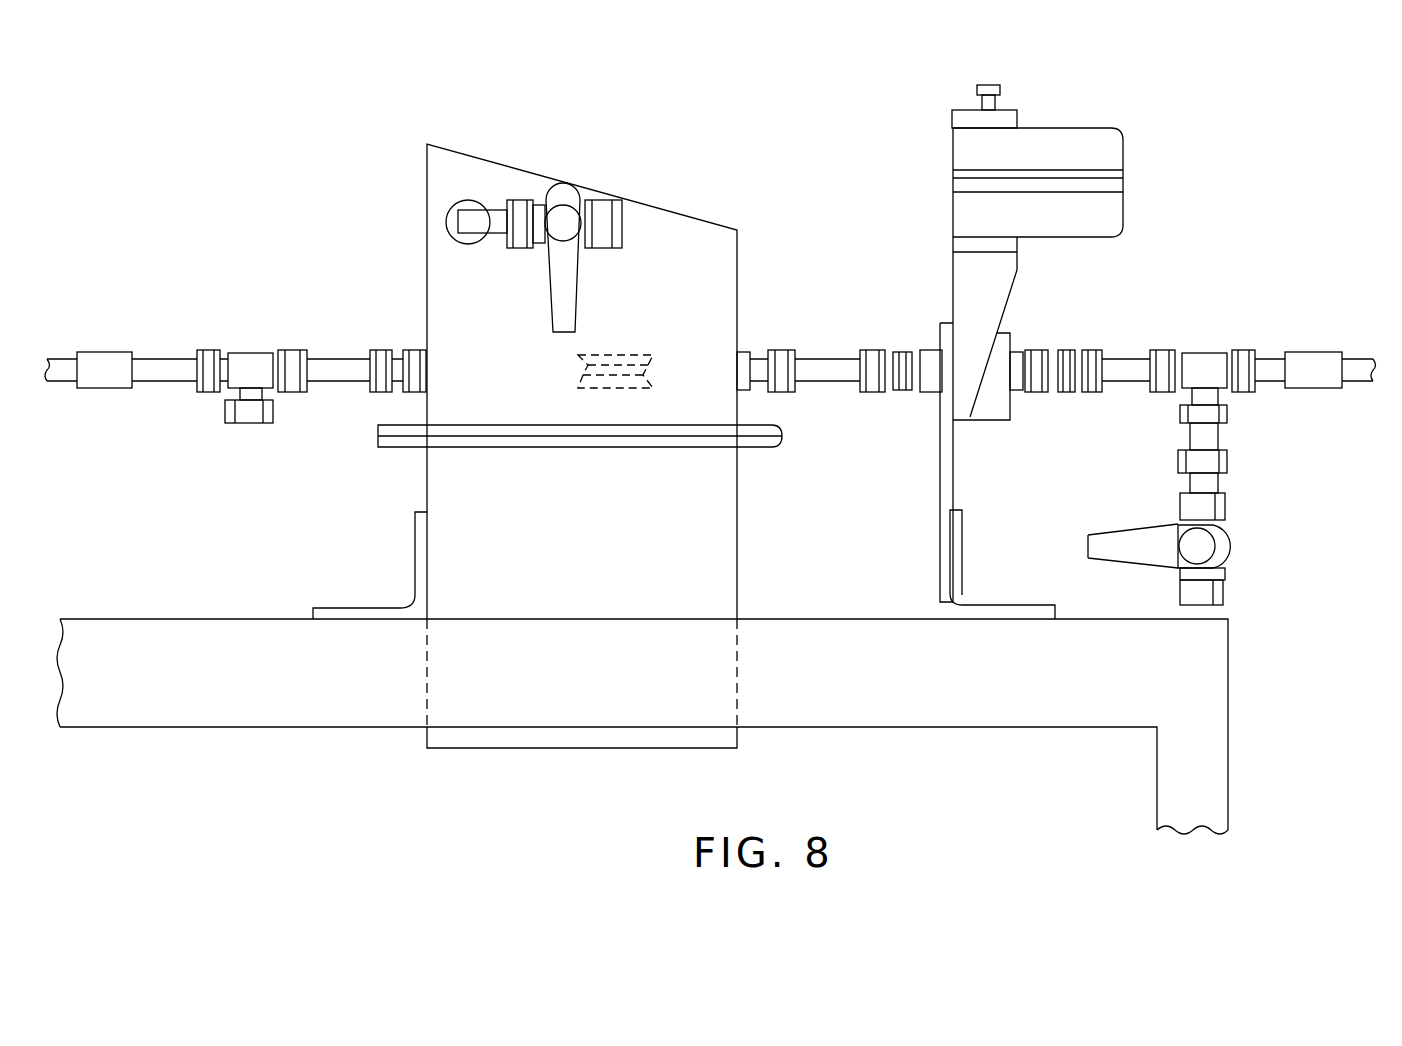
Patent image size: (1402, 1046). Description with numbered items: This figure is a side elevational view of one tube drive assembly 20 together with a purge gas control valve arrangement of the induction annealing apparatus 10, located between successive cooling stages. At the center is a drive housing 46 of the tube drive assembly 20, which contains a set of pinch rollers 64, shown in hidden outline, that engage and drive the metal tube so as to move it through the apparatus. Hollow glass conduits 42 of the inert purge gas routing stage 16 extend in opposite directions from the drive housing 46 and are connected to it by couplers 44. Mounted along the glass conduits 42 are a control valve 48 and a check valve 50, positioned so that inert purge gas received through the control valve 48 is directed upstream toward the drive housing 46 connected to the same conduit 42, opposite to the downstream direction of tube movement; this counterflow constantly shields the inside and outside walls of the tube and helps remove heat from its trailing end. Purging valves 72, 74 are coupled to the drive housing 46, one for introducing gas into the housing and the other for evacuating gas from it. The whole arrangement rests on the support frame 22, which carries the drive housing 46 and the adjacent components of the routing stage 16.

The induction annealing apparatus 10 is at (1197, 132).
The inert purge gas routing stage 16 is at (318, 350).
The tube drive assembly 20 is at (713, 195).
The support frame 22 is at (912, 733).
The glass conduit 42 is at (158, 353).
The coupler 44 is at (100, 353).
The drive housing 46 is at (740, 300).
The control valve 48 is at (250, 425).
The check valve 50 is at (1052, 128).
The pinch roller 64 is at (632, 353).
The purging valve 72 is at (547, 290).
The purging valve 74 is at (1240, 545).